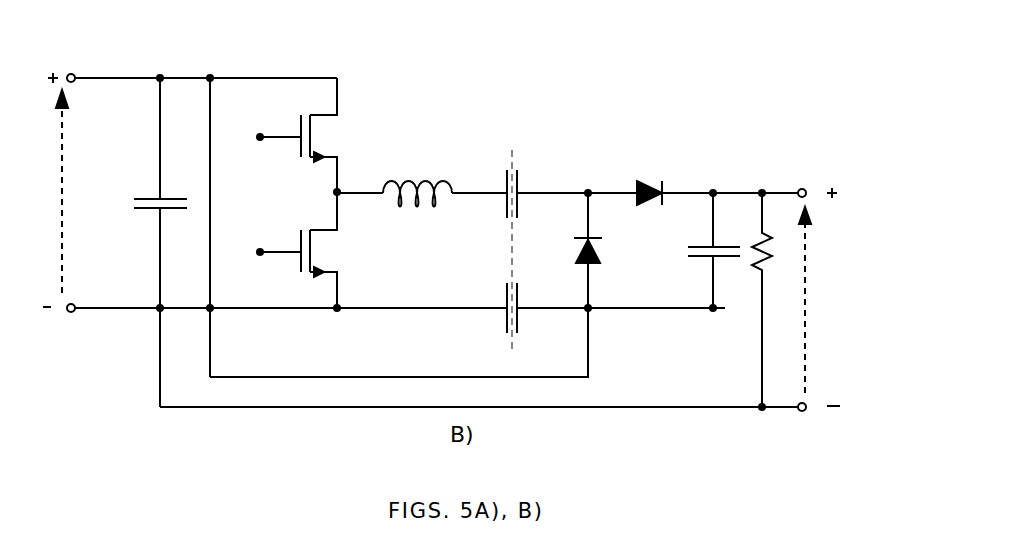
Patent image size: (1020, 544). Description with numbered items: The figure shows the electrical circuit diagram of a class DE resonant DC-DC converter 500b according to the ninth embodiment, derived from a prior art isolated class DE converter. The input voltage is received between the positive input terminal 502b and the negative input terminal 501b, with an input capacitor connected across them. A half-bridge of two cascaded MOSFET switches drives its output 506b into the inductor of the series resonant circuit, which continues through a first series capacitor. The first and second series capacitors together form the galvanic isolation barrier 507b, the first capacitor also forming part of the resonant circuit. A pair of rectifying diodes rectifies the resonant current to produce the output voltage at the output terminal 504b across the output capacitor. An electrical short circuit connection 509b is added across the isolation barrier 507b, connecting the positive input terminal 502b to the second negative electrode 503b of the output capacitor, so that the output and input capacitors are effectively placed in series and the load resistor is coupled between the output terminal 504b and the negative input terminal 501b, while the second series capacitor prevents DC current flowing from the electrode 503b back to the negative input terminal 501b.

The class DE resonant DC-DC converter 500b is at (190, 428).
The negative input terminal 501b is at (73, 313).
The positive input terminal 502b is at (69, 73).
The second negative electrode of the output capacitor 503b is at (712, 310).
The output terminal 504b is at (802, 187).
The output of the half-bridge circuit 506b is at (335, 190).
The galvanic isolation barrier 507b is at (512, 150).
The electrical short circuit connection 509b is at (305, 376).